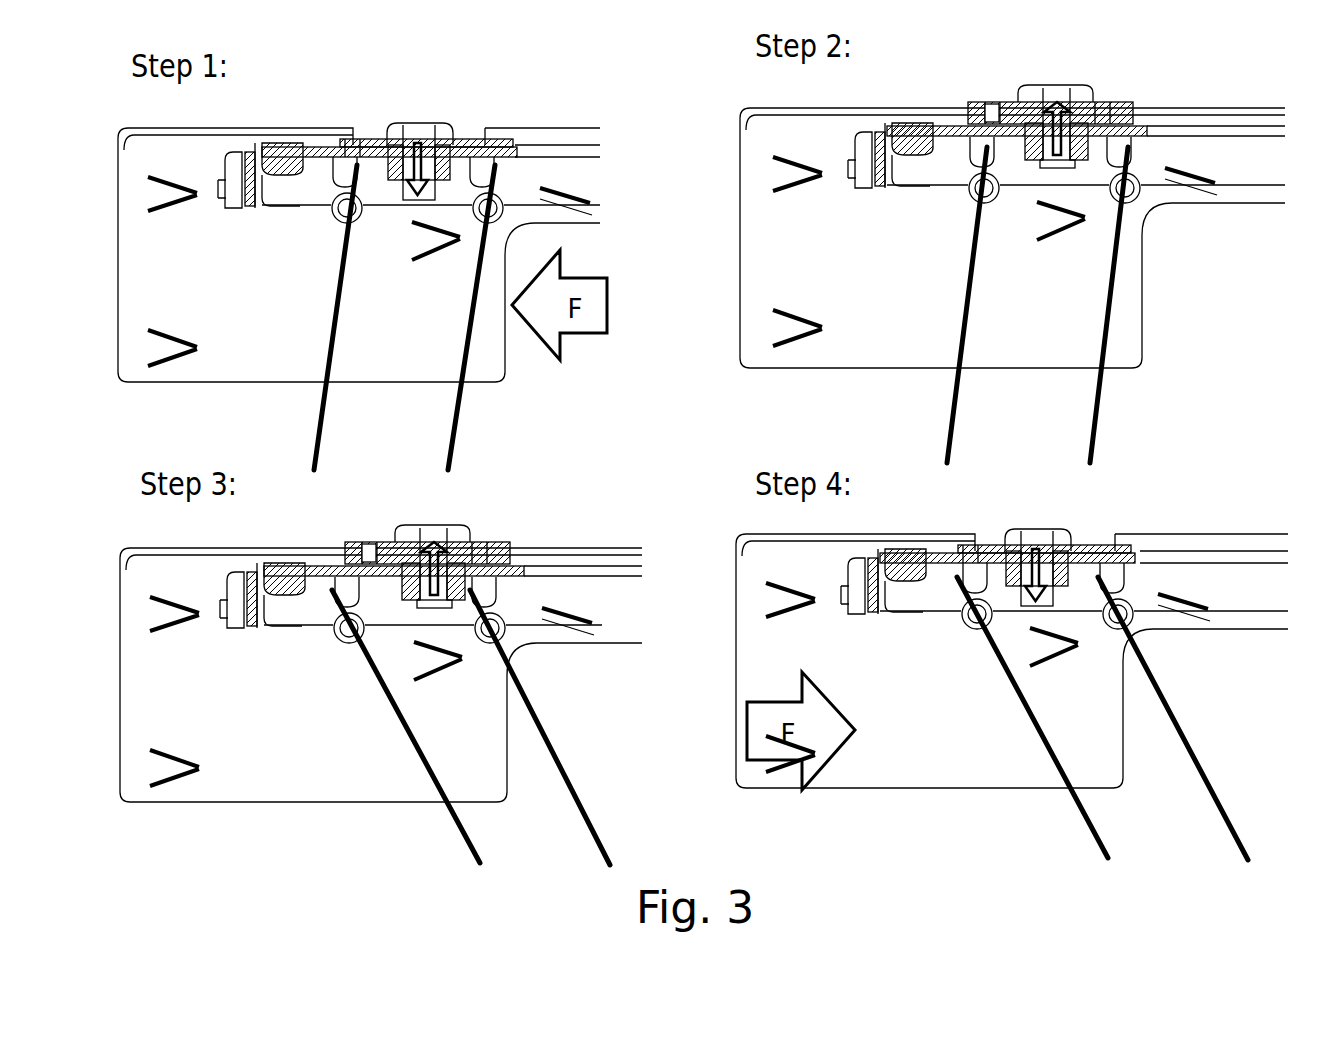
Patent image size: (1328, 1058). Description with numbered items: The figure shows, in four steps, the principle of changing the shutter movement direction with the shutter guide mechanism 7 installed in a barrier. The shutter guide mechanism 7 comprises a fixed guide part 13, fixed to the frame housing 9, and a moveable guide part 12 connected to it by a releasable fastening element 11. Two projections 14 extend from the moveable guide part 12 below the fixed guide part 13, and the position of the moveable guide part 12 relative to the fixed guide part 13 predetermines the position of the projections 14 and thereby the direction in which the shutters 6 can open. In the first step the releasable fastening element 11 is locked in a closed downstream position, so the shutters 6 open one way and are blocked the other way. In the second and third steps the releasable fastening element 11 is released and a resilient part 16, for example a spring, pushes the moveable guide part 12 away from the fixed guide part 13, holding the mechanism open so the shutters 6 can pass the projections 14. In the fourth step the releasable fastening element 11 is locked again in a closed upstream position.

The shutters 6 is at (338, 360).
The shutter guide mechanism 7 is at (478, 84).
The frame housing 9 is at (318, 210).
The releasable fastening element 11 is at (420, 118).
The moveable guide part 12 is at (366, 134).
The fixed guide part 13 is at (318, 166).
The projections 14 is at (345, 185).
The resilient part 16 is at (1023, 116).